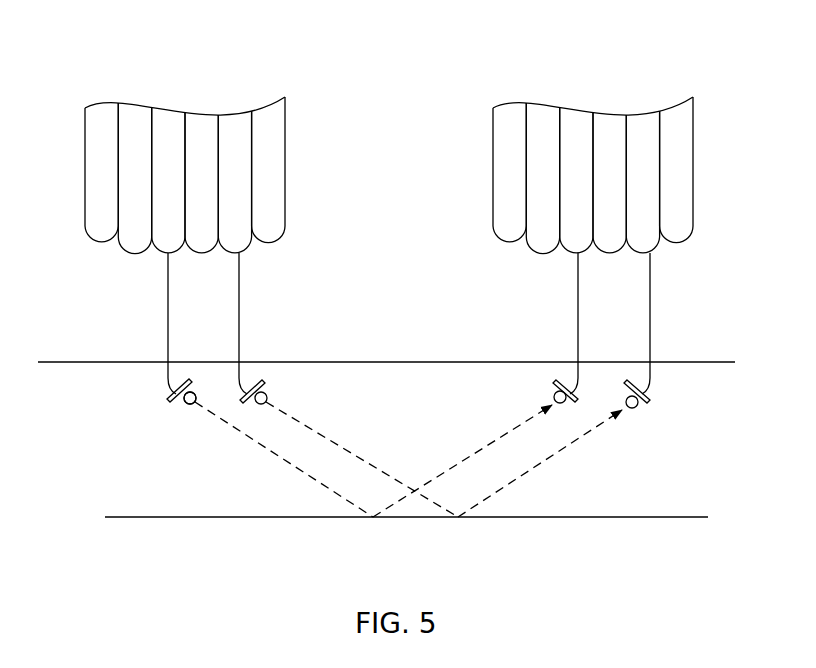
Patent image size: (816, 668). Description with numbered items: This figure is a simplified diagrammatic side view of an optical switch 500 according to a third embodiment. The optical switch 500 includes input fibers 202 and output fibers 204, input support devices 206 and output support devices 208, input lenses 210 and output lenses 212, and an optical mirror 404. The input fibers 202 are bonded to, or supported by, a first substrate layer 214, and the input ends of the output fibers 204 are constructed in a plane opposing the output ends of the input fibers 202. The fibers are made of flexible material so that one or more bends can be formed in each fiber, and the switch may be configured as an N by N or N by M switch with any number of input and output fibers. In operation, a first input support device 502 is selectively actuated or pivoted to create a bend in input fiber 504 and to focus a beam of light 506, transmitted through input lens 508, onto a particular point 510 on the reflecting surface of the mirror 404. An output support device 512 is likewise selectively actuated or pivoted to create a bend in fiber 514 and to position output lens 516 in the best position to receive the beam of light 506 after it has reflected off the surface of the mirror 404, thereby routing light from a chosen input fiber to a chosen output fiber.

The optical switch 500 is at (675, 42).
The input fibers 202 is at (292, 155).
The output fibers 204 is at (702, 155).
The first substrate layer 214 is at (78, 362).
The optical mirror 404 is at (676, 517).
The input fiber 504 is at (168, 302).
The fiber 514 is at (578, 303).
The first input support device 502 is at (187, 377).
The output support device 512 is at (557, 377).
The input support devices 206 is at (152, 368).
The output support devices 208 is at (655, 398).
The input lenses 210 is at (176, 408).
The output lenses 212 is at (642, 415).
The output lens 516 is at (554, 396).
The input lens 508 is at (190, 404).
The beam of light 506 is at (292, 465).
The particular point 510 is at (375, 520).